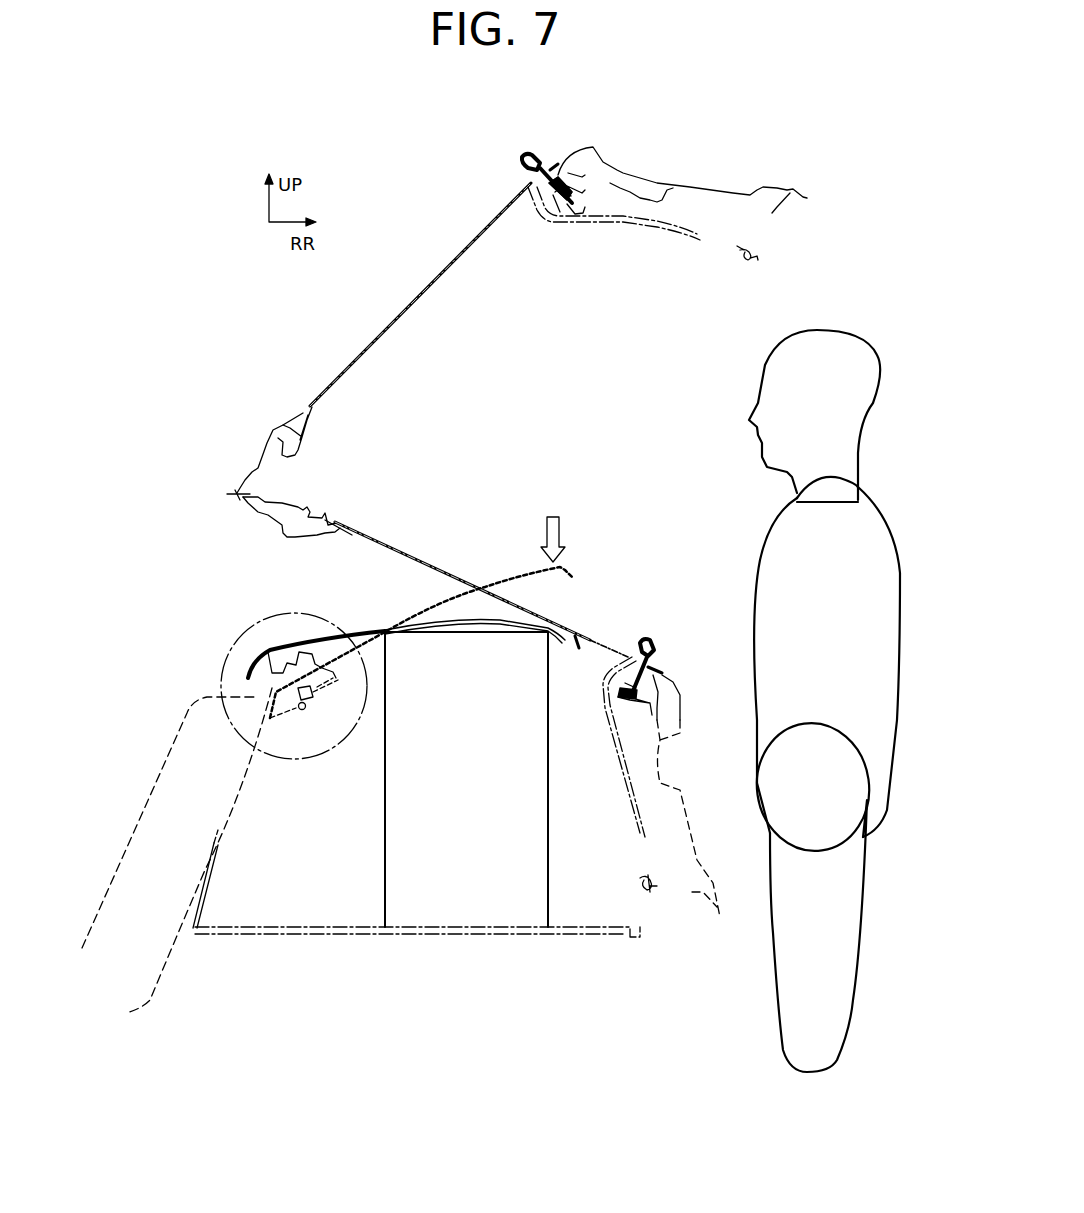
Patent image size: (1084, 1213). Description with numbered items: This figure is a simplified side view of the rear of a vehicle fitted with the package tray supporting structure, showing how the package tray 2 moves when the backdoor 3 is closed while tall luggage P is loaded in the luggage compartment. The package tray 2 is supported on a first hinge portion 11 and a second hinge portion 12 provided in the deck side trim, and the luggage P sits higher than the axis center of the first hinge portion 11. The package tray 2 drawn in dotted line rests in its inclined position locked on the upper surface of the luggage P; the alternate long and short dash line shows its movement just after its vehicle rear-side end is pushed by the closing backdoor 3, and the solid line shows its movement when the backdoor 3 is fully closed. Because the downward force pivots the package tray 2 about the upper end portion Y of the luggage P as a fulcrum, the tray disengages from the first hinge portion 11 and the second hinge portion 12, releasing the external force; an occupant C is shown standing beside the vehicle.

The package tray 2 is at (438, 602).
The backdoor 3 is at (590, 153).
The first hinge portion 11 is at (303, 710).
The second hinge portion 12 is at (317, 700).
The luggage P is at (490, 913).
The upper end portion Y is at (385, 628).
The occupant C is at (872, 395).